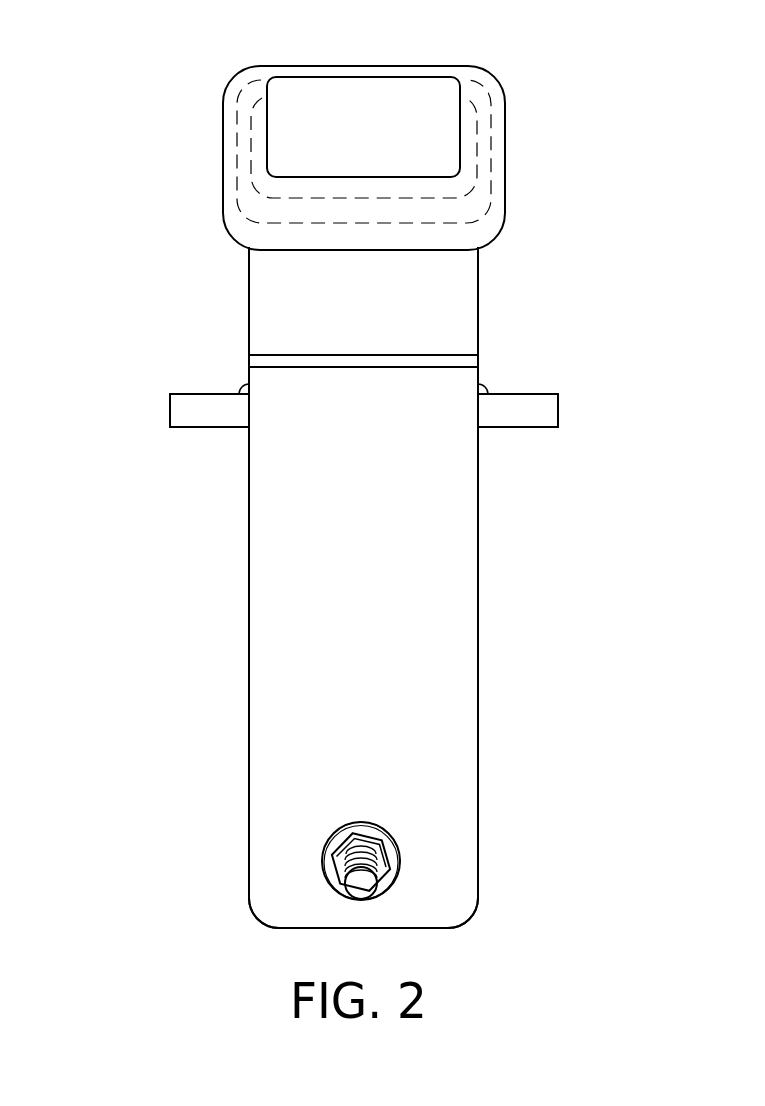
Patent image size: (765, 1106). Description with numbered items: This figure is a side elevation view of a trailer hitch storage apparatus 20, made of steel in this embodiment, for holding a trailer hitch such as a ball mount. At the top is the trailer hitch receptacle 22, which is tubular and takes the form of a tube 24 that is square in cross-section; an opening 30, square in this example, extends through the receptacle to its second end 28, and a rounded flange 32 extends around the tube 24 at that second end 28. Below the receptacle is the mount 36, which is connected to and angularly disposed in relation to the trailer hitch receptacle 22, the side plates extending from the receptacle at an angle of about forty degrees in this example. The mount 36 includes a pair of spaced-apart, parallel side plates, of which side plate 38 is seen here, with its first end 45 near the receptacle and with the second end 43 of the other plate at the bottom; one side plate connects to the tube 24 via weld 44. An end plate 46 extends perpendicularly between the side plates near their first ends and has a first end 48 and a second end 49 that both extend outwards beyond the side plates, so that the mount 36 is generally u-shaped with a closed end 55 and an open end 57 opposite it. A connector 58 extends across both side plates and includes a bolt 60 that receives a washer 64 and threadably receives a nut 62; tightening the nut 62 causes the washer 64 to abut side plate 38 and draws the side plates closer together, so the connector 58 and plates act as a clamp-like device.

The trailer hitch storage apparatus 20 is at (163, 213).
The trailer hitch receptacle 22 is at (490, 270).
The tube 24 is at (438, 296).
The second end 28 is at (258, 133).
The opening 30 is at (348, 100).
The rounded flange 32 is at (497, 128).
The mount 36 is at (213, 675).
The side plate 38 is at (380, 636).
The second end 43 is at (240, 922).
The weld 44 is at (249, 355).
The first end 45 is at (249, 367).
The end plate 46 is at (202, 410).
The first end 48 is at (170, 408).
The second end 49 is at (558, 406).
The closed end 55 is at (566, 444).
The open end 57 is at (527, 923).
The connector 58 is at (313, 858).
The bolt 60 is at (362, 882).
The nut 62 is at (390, 860).
The washer 64 is at (378, 826).